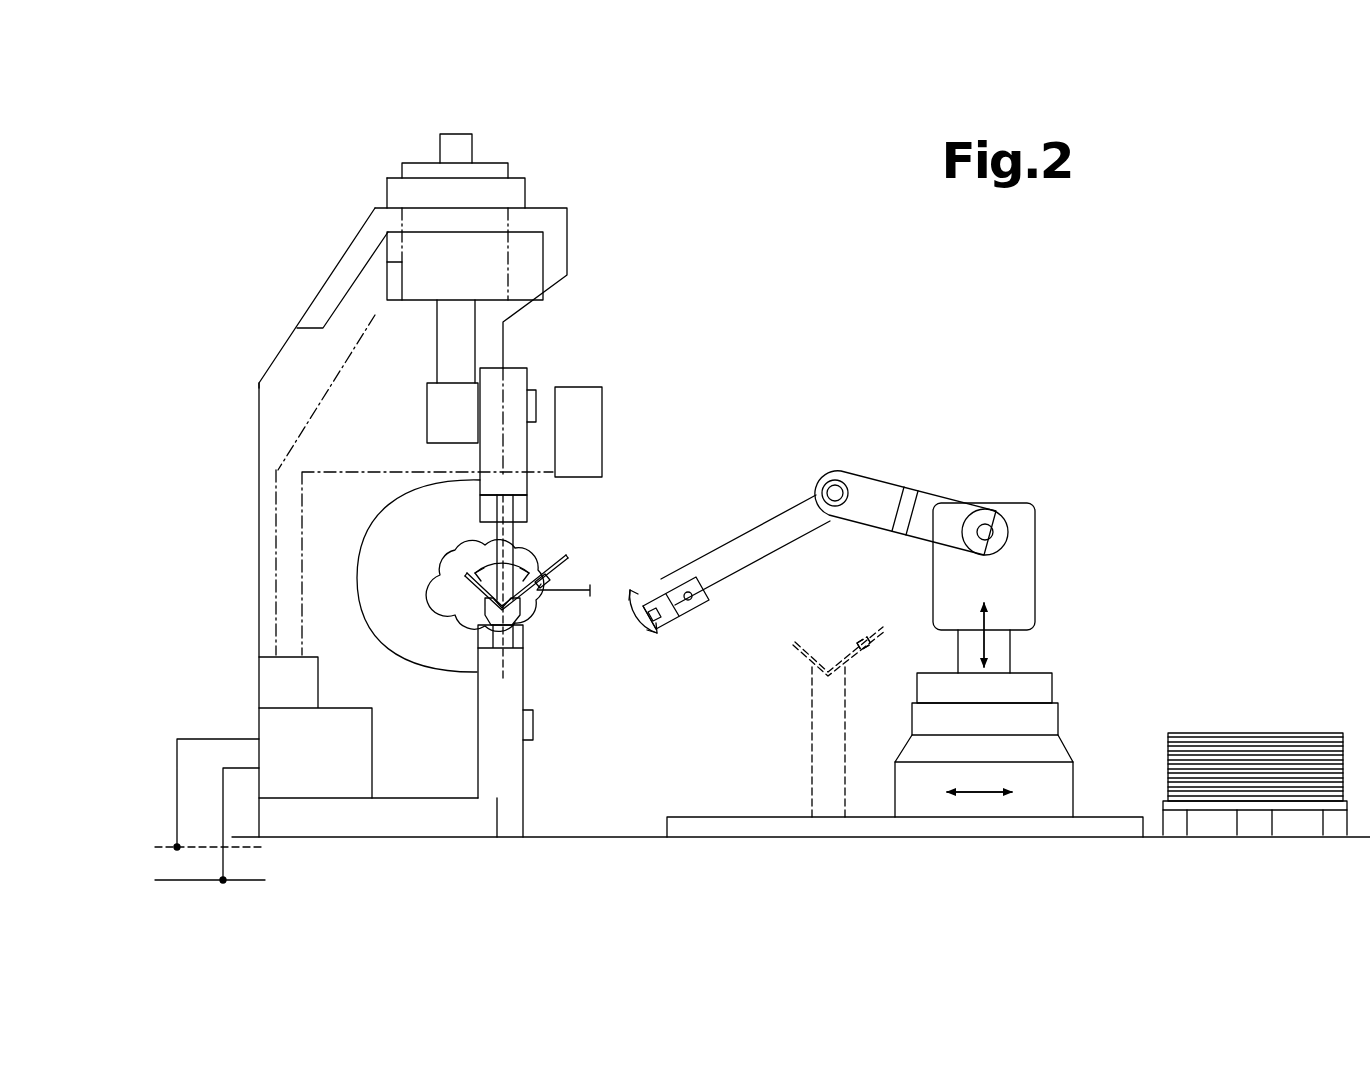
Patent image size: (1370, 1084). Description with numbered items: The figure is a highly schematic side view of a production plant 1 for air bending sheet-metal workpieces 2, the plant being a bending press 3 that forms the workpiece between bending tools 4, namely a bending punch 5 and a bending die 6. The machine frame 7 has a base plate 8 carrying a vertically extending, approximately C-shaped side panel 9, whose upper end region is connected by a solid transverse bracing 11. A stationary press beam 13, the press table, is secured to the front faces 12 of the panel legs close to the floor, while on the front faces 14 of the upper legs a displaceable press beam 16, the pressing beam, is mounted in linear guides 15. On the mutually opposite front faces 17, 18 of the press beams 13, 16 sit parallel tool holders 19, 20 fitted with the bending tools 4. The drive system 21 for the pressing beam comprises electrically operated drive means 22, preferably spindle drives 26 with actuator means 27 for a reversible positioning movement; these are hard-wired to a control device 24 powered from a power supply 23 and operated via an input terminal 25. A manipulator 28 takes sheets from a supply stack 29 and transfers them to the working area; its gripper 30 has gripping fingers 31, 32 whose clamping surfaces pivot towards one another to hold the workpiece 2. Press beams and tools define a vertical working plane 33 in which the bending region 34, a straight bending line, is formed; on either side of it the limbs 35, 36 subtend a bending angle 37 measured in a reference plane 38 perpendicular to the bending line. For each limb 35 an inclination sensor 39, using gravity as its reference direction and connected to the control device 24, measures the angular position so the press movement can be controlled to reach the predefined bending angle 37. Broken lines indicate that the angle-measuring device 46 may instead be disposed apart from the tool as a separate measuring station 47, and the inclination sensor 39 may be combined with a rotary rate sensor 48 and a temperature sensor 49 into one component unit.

The production plant 1 is at (740, 205).
The workpiece 2 is at (467, 613).
The bending press 3 is at (563, 138).
The bending tools 4 is at (484, 604).
The bending punch 5 is at (463, 585).
The bending die 6 is at (520, 607).
The machine frame 7 is at (299, 242).
The base plate 8 is at (450, 822).
The side panel 9 is at (282, 403).
The transverse bracing 11 is at (563, 248).
The front faces 12 is at (478, 740).
The stationary press beam 13 is at (490, 785).
The front faces 14 is at (481, 457).
The linear guides 15 is at (488, 383).
The press beam 16 is at (517, 438).
The front face 17 is at (528, 637).
The front face 18 is at (484, 505).
The tool holder 19 is at (490, 640).
The tool holder 20 is at (497, 530).
The drive system 21 is at (513, 152).
The drive means 22 is at (513, 193).
The power supply 23 is at (275, 869).
The control device 24 is at (323, 783).
The input terminal 25 is at (587, 403).
The spindle drives 26 is at (388, 157).
The actuator means 27 is at (452, 318).
The manipulator 28 is at (1048, 480).
The supply stack 29 is at (1242, 723).
The gripper 30 is at (663, 595).
The gripping finger 31 is at (685, 550).
The gripping finger 32 is at (675, 622).
The working plane 33 is at (504, 676).
The bending region 34 is at (550, 563).
The limb 35 is at (563, 577).
The limb 36 is at (392, 657).
The bending angle 37 is at (510, 555).
The reference plane 38 is at (550, 587).
The inclination sensor 39 is at (662, 592).
The angle-measuring device 46 is at (545, 587).
The measuring station 47 is at (800, 740).
The rotary rate sensor 48 is at (860, 643).
The temperature sensor 49 is at (562, 585).